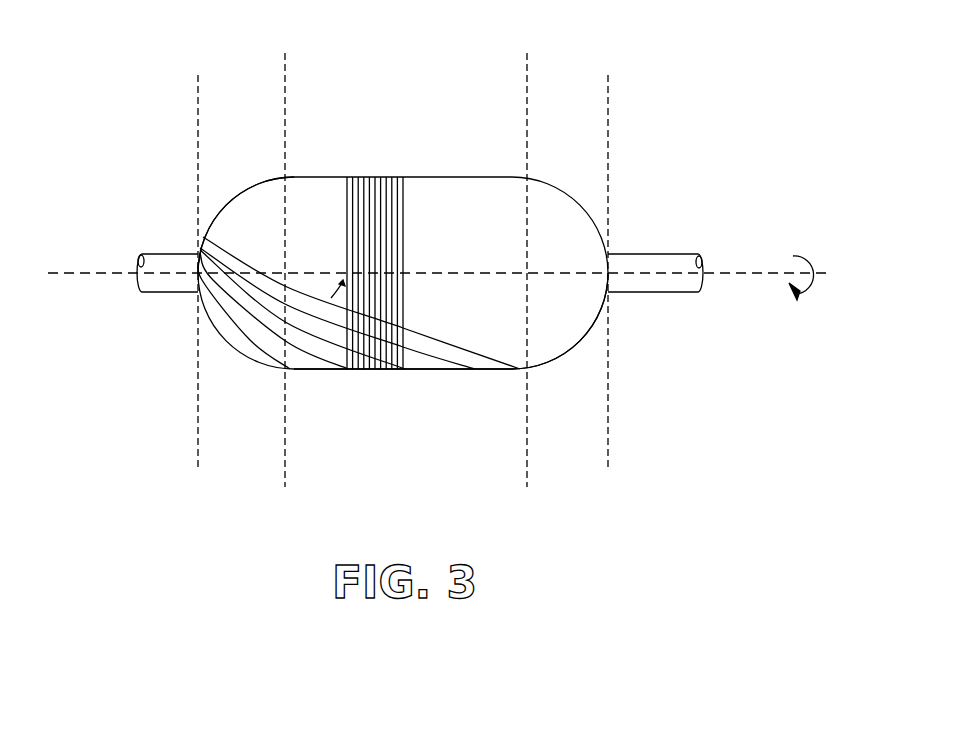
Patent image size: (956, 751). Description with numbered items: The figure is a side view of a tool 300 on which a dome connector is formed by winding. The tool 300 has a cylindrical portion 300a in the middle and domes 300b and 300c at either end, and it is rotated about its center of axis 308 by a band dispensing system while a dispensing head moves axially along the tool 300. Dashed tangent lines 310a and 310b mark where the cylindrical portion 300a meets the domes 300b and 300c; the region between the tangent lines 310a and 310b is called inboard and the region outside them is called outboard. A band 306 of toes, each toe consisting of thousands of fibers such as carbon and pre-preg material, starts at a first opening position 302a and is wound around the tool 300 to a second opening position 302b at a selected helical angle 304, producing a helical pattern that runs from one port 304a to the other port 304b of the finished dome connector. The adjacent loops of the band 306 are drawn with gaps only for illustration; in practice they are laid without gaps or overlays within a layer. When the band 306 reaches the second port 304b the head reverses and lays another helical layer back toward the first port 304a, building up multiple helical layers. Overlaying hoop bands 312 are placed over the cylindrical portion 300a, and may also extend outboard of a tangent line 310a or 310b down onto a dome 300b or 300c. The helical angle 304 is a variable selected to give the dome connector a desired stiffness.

The tool 300 is at (510, 318).
The cylindrical portion 300a is at (448, 317).
The dome 300b is at (253, 210).
The dome 300c is at (595, 304).
The first opening position 302a is at (198, 182).
The second opening position 302b is at (608, 178).
The helical angle 304 is at (325, 278).
The first port 304a is at (200, 252).
The second port 304b is at (608, 252).
The band 306 is at (307, 340).
The center of axis 308 is at (732, 272).
The tangent line 310a is at (285, 77).
The tangent line 310b is at (527, 79).
The hoop bands 312 is at (390, 178).